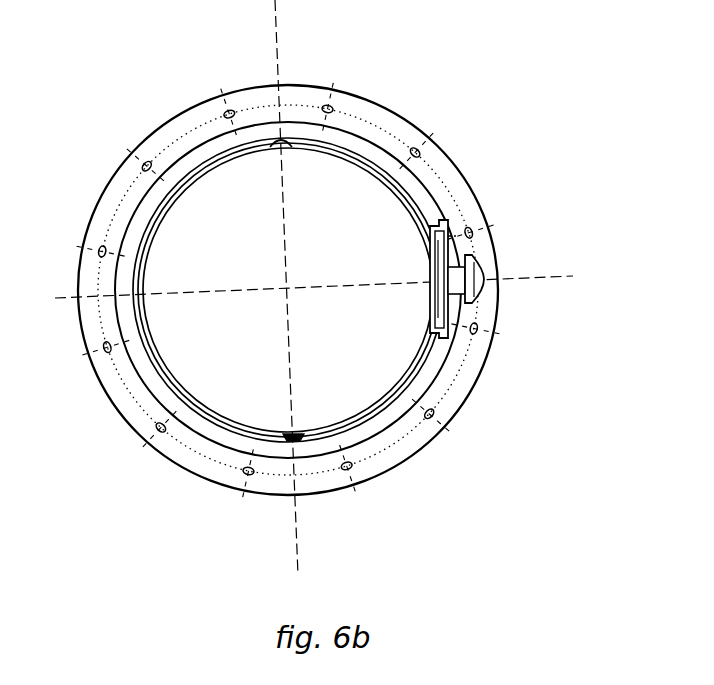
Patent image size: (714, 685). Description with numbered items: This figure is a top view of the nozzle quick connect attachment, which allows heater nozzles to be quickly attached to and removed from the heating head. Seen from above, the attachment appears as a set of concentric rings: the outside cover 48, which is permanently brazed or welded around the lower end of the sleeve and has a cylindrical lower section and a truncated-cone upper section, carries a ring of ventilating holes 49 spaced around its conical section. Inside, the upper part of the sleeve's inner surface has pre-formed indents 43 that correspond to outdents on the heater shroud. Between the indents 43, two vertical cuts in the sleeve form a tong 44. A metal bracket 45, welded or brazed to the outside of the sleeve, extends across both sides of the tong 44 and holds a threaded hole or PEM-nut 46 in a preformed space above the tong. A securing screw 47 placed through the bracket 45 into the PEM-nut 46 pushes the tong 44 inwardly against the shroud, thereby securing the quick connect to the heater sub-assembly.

The indents 43 is at (340, 431).
The tong 44 is at (456, 235).
The bracket 45 is at (443, 218).
The PEM-nut 46 is at (443, 287).
The securing screw 47 is at (473, 280).
The outside cover 48 is at (478, 324).
The ventilating holes 49 is at (473, 362).